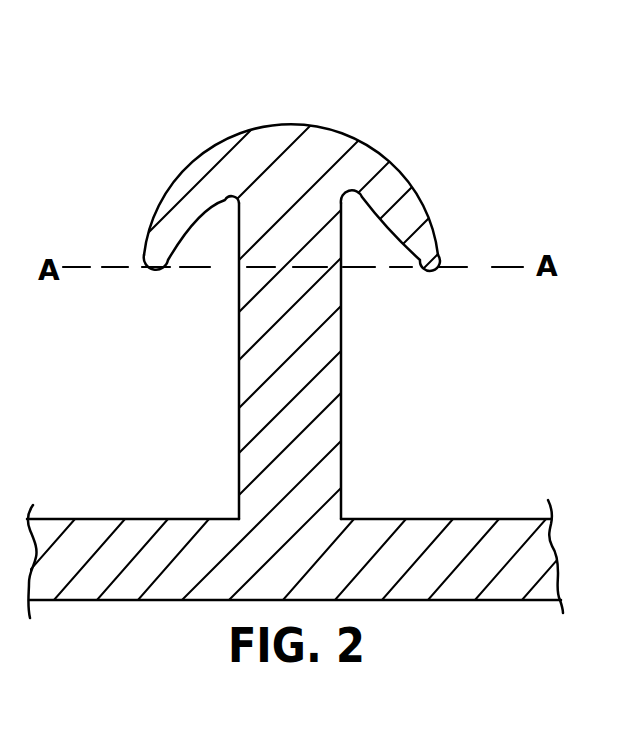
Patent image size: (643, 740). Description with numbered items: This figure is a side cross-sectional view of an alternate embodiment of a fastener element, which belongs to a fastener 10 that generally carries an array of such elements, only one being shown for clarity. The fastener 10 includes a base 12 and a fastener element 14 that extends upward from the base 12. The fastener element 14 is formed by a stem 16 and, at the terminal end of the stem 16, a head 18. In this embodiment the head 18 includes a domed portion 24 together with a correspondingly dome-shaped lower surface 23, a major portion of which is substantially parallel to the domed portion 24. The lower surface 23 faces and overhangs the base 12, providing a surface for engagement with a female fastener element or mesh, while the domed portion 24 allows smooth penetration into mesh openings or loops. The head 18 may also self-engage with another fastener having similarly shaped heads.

The fastener 10 is at (321, 310).
The base 12 is at (448, 546).
The fastener element 14 is at (380, 272).
The stem 16 is at (308, 412).
The head 18 is at (292, 177).
The dome-shaped lower surface 23 is at (380, 218).
The domed portion 24 is at (265, 123).